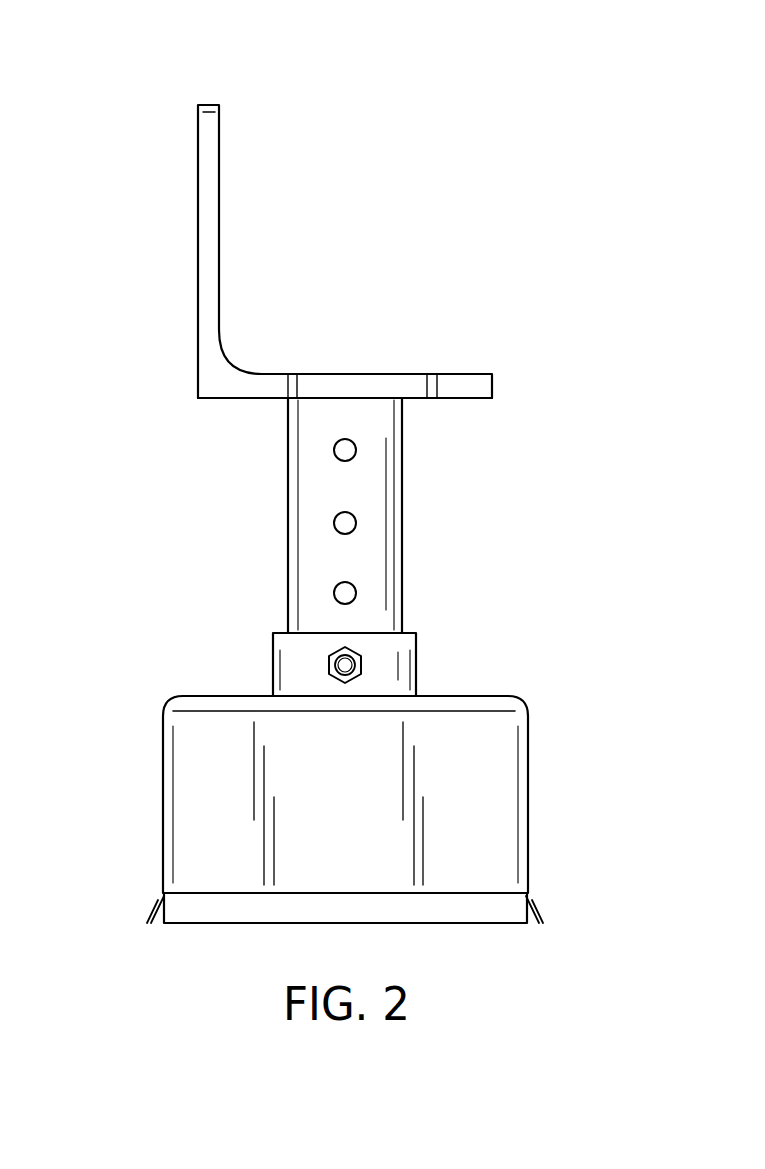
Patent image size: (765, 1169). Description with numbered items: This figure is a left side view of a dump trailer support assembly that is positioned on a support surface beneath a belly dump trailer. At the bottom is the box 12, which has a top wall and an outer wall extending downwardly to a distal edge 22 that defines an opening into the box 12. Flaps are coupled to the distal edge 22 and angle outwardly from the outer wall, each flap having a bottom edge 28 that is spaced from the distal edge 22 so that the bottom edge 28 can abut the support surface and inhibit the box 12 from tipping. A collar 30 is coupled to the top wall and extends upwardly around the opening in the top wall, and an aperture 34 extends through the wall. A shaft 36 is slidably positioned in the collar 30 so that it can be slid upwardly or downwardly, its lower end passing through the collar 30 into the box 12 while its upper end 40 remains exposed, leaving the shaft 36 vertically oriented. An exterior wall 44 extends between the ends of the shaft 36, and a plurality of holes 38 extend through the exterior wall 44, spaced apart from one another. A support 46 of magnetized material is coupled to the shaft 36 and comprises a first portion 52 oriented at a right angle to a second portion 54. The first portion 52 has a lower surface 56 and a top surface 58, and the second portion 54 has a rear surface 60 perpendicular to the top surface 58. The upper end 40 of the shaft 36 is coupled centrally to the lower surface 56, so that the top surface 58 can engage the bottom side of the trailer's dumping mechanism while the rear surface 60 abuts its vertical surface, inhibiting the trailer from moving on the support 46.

The box 12 is at (518, 698).
The distal edge 22 is at (498, 898).
The bottom edge 28 is at (418, 662).
The collar 30 is at (273, 665).
The aperture 34 is at (350, 650).
The shaft 36 is at (288, 472).
The holes 38 is at (352, 450).
The upper end 40 is at (366, 387).
The exterior wall 44 is at (305, 548).
The support 46 is at (198, 398).
The first portion 52 is at (485, 326).
The second portion 54 is at (260, 213).
The lower surface 56 is at (465, 400).
The top surface 58 is at (423, 373).
The rear surface 60 is at (218, 142).